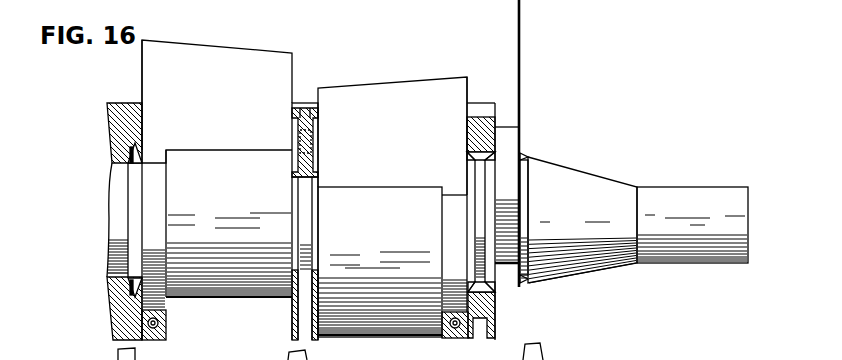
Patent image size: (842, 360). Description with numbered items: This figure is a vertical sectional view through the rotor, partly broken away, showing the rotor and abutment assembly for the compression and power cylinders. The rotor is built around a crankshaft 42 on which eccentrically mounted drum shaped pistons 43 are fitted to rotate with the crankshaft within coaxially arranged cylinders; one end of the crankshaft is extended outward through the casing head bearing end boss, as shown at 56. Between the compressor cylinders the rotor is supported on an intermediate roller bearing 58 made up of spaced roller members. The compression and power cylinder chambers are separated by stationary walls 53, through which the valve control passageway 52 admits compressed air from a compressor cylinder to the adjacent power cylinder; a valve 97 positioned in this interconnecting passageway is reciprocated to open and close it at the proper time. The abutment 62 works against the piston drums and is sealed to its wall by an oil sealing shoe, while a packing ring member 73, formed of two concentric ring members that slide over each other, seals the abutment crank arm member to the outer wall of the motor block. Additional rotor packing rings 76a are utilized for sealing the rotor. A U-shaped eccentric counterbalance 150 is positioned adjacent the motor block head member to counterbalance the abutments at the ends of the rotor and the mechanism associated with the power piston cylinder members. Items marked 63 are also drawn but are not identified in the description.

The abutment 62 is at (287, 53).
The U-shaped eccentric counterbalance 150 is at (515, 50).
The valve control passageway 52 is at (300, 122).
The valve 97 is at (305, 145).
The stationary wall 53 is at (292, 322).
The intermediate roller bearing 58 is at (113, 173).
The drum shaped piston 43 is at (232, 300).
The packing ring member 73 is at (167, 330).
The rotor packing ring 76a is at (525, 287).
The crankshaft 42 is at (570, 180).
The crankshaft end 56 is at (684, 187).
The bolt 63 is at (345, 351).